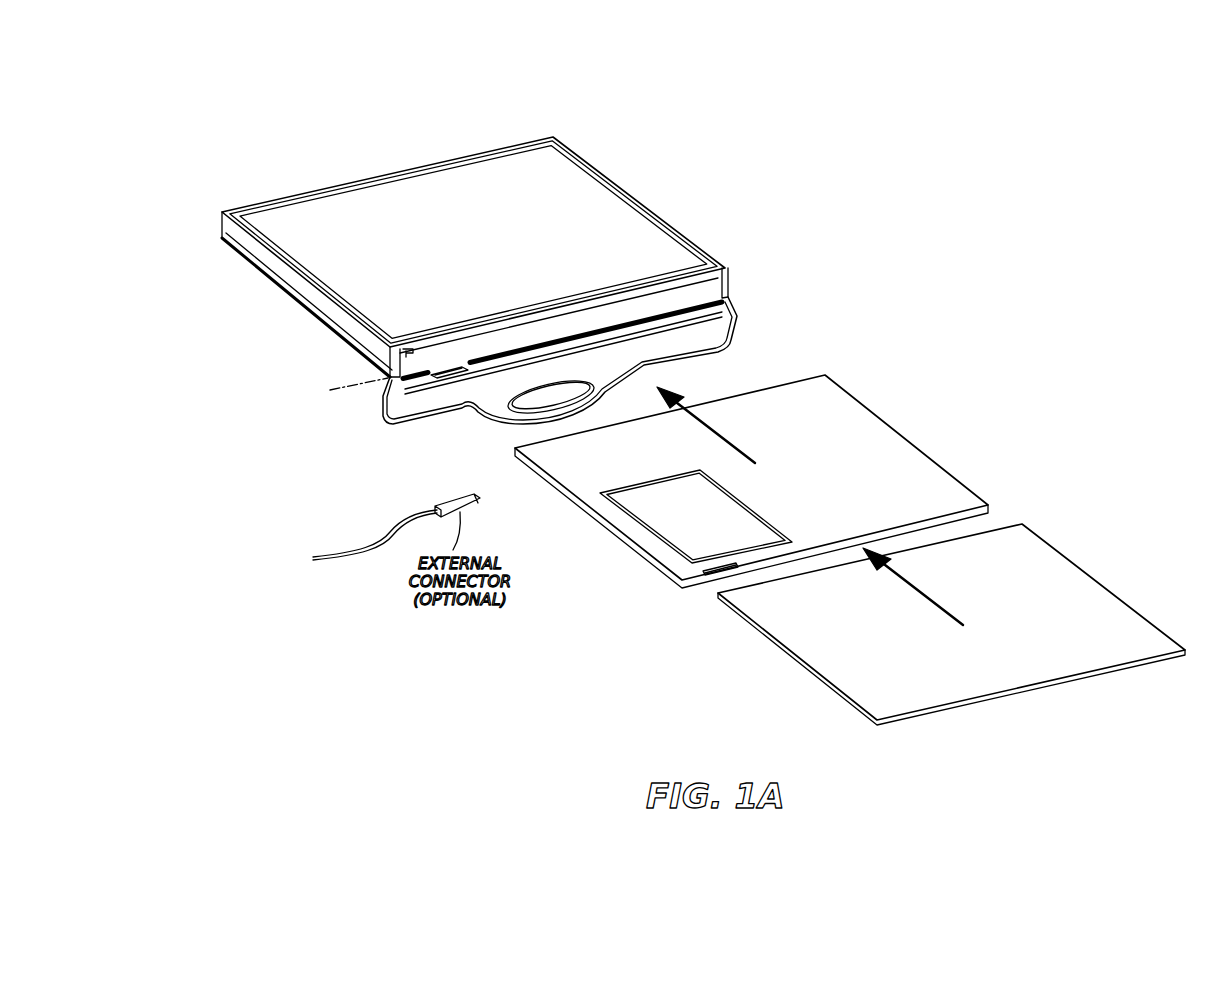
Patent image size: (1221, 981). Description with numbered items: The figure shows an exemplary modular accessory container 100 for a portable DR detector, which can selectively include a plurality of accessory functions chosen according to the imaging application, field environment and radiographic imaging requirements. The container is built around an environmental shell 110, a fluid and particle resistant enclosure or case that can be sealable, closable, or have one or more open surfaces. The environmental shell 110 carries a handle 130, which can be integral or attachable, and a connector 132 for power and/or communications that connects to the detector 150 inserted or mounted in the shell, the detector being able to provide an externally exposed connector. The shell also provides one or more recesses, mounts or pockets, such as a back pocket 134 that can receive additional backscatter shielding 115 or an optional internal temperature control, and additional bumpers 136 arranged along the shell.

The modular accessory container 100 is at (324, 142).
The environmental shell 110 is at (593, 217).
The backscatter shielding 115 is at (1098, 620).
The handle 130 is at (508, 388).
The connector 132 is at (443, 378).
The back pocket 134 is at (728, 298).
The bumpers 136 is at (332, 315).
The detector 150 is at (933, 474).